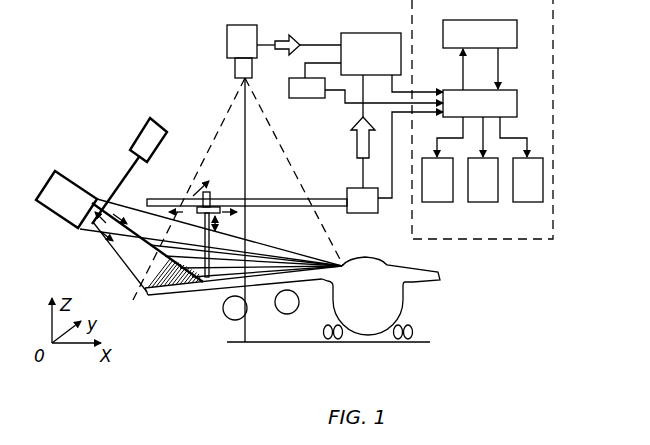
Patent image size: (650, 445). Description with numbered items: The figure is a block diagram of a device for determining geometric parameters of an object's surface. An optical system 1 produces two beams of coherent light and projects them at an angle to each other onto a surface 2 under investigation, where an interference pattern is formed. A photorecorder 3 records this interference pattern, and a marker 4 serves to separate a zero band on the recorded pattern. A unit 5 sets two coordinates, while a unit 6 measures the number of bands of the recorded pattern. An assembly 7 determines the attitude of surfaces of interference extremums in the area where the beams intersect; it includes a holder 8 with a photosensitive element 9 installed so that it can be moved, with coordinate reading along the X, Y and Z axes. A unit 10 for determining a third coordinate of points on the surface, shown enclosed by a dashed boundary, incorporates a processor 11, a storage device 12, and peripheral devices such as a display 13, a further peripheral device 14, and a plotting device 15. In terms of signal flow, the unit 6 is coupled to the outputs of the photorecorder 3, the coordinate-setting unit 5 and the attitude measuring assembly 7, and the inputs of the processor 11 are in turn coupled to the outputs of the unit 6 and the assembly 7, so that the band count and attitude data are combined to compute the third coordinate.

The optical system 1 is at (72, 227).
The surface under investigation 2 is at (200, 288).
The photorecorder 3 is at (238, 183).
The marker 4 is at (147, 138).
The unit for setting two coordinates 5 is at (317, 97).
The unit for measuring the number of bands 6 is at (371, 54).
The assembly for determining attitude of surfaces of interference extremums 7 is at (353, 192).
The holder 8 is at (197, 198).
The photosensitive element 9 is at (220, 254).
The unit for determining a third coordinate 10 is at (502, 241).
The processor 11 is at (480, 82).
The storage device 12 is at (480, 34).
The display 13 is at (442, 159).
The output unit 14 is at (483, 159).
The plotting device 15 is at (521, 159).